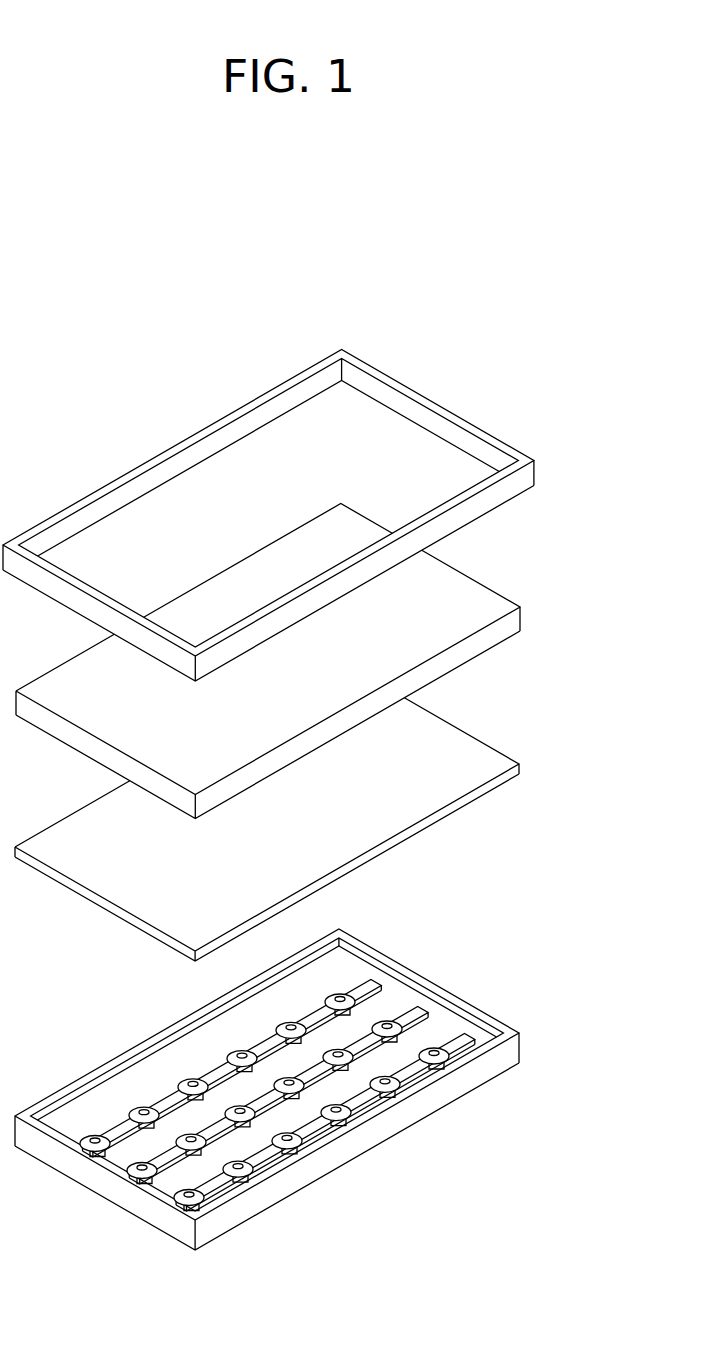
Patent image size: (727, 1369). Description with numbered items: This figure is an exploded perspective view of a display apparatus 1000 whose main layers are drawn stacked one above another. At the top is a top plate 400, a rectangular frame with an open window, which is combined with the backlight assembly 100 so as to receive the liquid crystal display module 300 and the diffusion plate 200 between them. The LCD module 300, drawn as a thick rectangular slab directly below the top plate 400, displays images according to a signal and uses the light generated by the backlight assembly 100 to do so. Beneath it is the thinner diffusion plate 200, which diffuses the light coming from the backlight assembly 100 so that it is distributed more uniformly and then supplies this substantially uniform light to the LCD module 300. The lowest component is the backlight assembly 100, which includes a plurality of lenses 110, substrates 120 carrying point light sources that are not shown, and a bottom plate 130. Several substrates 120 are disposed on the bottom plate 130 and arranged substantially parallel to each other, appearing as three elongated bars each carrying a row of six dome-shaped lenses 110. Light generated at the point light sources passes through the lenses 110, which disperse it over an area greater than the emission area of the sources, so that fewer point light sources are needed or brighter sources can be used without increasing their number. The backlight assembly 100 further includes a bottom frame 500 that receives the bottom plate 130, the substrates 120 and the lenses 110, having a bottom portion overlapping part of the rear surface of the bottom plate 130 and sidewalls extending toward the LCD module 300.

The display apparatus 1000 is at (244, 236).
The top plate 400 is at (535, 476).
The liquid crystal display module 300 is at (522, 618).
The diffusion plate 200 is at (521, 769).
The backlight assembly 100 is at (565, 880).
The lens 110 is at (340, 993).
The substrate 120 is at (363, 982).
The bottom plate 130 is at (438, 1037).
The bottom frame 500 is at (472, 1080).